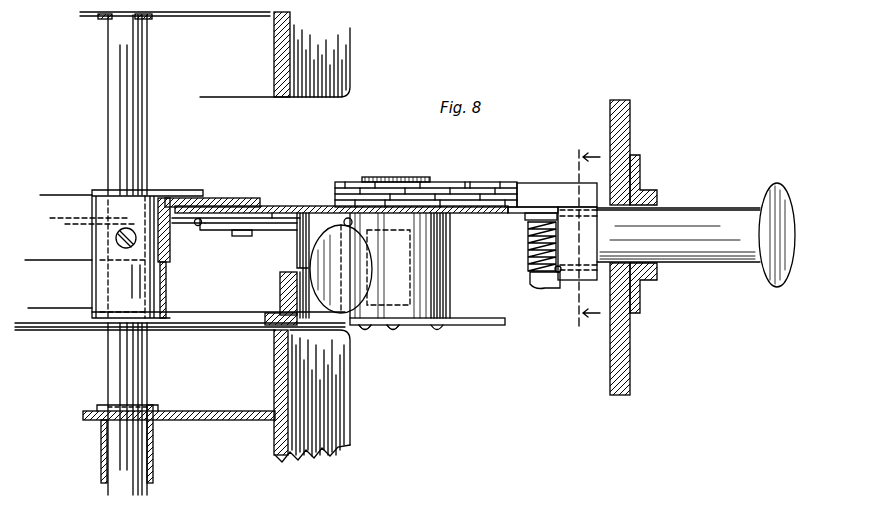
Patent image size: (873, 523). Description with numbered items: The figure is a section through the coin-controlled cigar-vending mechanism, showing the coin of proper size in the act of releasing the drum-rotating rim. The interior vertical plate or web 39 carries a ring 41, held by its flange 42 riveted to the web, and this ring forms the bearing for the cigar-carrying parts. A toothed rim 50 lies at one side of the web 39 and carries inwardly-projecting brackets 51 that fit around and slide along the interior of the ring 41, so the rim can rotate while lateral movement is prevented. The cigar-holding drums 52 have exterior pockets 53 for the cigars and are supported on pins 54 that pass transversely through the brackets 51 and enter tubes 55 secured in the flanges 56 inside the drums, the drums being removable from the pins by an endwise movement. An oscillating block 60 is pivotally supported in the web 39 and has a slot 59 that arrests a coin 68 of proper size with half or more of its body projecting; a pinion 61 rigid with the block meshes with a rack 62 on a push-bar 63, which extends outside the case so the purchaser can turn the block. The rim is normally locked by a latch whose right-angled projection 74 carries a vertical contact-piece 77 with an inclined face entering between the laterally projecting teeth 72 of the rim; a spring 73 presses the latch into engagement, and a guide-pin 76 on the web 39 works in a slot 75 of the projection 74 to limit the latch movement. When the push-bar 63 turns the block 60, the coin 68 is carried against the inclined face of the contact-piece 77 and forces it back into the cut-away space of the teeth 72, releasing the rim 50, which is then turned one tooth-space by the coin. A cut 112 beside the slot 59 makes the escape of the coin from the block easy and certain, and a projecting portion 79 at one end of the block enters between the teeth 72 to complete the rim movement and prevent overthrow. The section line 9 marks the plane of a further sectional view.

The pin 54 is at (135, 78).
The exterior pocket 53 is at (377, 437).
The cigar-holding drum 52 is at (272, 428).
The flange 56 is at (204, 411).
The tube 55 is at (154, 465).
The bracket 51 is at (188, 318).
The ring 41 is at (172, 250).
The flange 42 is at (233, 200).
The web 39 is at (302, 206).
The spring 73 is at (185, 218).
The slot 75 is at (277, 214).
The tooth 72 is at (326, 218).
The right-angled projection 74 is at (248, 232).
The guide-pin 76 is at (248, 236).
The contact-piece 77 is at (300, 240).
The toothed rim 50 is at (280, 287).
The coin 68 is at (341, 269).
The oscillating block 60 is at (400, 265).
The projecting portion 79 is at (480, 318).
The cut 112 is at (370, 333).
The slot 59 is at (413, 325).
The rack 62 is at (486, 184).
The pinion 61 is at (412, 179).
The push-bar 63 is at (672, 222).
The section line 9 9 is at (585, 245).